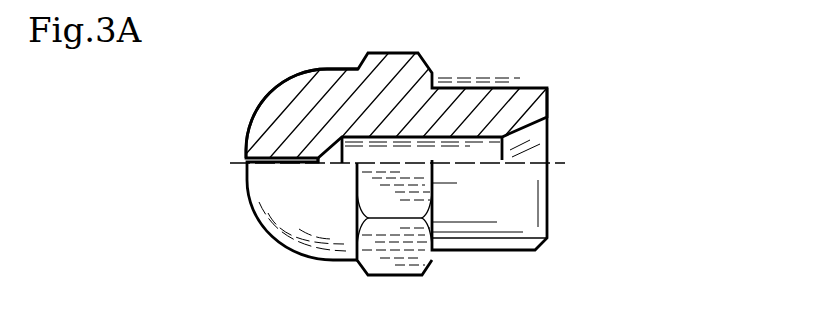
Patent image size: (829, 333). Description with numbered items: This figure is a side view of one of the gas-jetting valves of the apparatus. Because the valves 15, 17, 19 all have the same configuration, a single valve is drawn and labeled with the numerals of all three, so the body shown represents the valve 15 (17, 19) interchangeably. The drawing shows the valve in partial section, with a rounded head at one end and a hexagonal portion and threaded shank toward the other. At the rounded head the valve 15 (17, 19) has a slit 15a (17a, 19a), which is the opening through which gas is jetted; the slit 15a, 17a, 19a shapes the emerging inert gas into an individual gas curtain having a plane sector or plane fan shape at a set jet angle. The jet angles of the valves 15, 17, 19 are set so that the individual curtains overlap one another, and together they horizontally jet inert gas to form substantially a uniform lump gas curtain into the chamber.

The valve 15 is at (373, 157).
The valve 17 is at (373, 157).
The valve 19 is at (535, 73).
The slit 15a is at (181, 164).
The slit 17a is at (181, 164).
The slit 19a is at (246, 162).